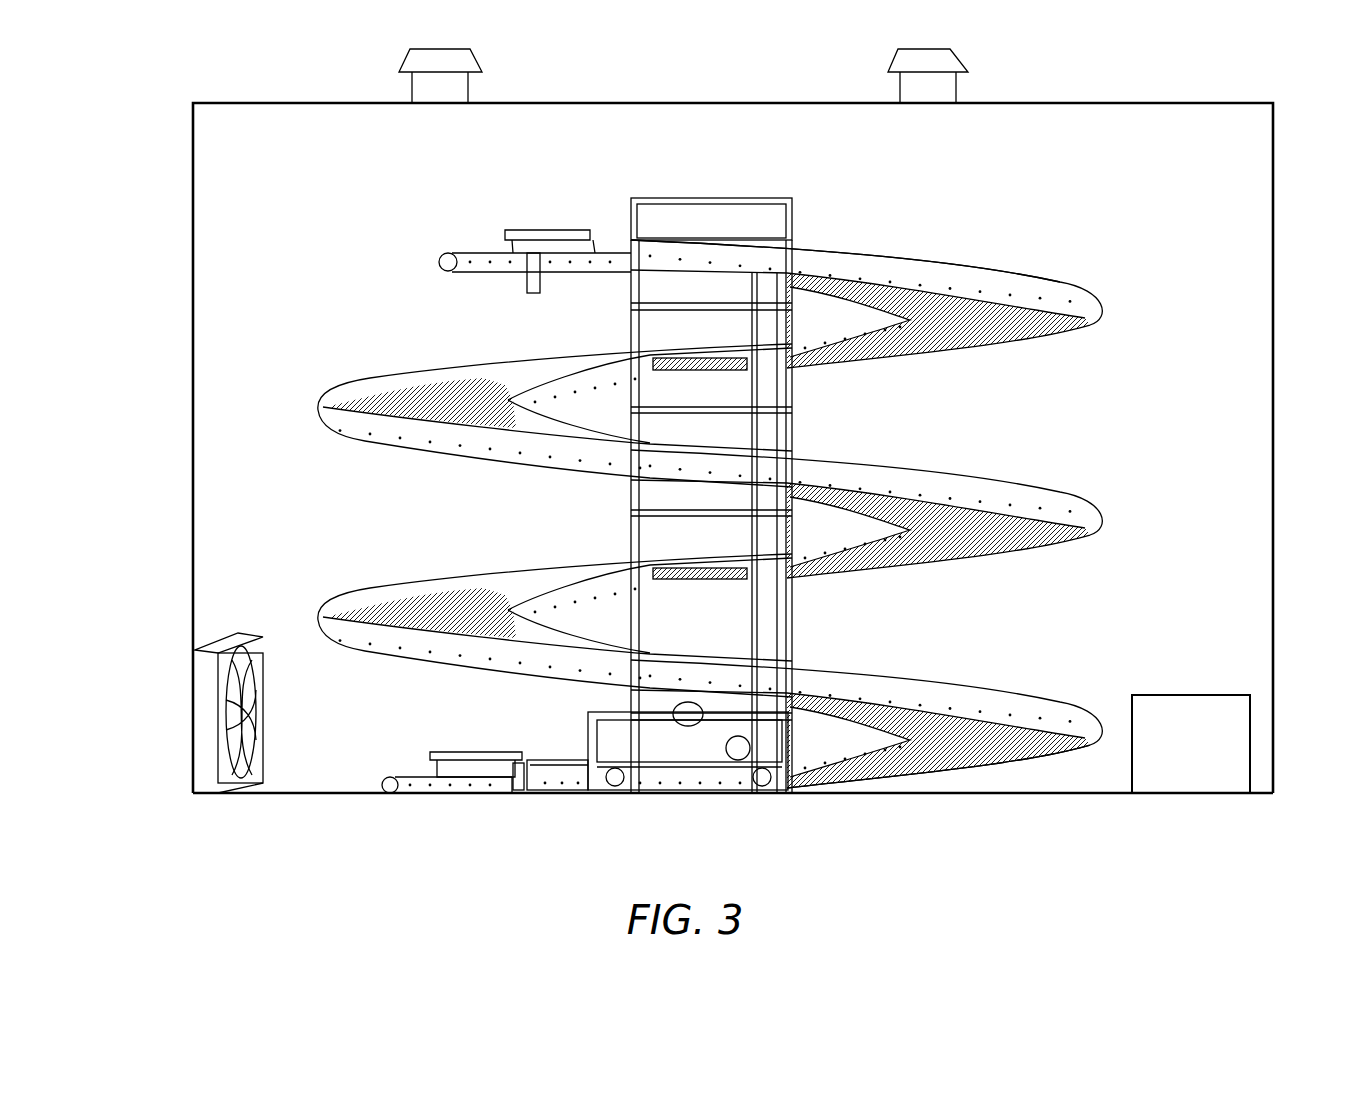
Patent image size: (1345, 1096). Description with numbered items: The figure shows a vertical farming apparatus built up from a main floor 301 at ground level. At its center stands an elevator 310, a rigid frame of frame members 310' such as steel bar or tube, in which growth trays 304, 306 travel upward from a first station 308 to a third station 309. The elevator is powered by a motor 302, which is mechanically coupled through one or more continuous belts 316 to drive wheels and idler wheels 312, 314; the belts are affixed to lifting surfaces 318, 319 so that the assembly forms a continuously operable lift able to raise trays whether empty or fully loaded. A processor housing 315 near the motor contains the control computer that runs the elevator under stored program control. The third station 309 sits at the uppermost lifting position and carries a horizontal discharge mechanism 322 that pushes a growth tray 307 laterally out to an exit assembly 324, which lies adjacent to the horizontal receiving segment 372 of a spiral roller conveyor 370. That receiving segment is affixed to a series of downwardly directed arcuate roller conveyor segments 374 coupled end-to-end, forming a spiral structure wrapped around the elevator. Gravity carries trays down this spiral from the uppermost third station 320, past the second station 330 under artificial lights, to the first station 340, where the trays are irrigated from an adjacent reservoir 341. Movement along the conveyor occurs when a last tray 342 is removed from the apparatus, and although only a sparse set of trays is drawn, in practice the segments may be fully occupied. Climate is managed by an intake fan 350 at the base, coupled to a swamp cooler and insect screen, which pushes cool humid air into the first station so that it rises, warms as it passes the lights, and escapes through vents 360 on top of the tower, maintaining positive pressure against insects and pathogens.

The main floor 301 is at (1145, 804).
The motor 302 is at (512, 796).
The growth tray 304 is at (667, 557).
The growth tray 306 is at (628, 352).
The growth tray 307 is at (524, 228).
The first station 308 is at (690, 727).
The third station 309 is at (789, 231).
The elevator 310 is at (711, 466).
The frame members 310' is at (744, 191).
The drive wheel 312 is at (612, 782).
The idler wheel 314 is at (762, 786).
The processor housing 315 is at (553, 792).
The continuous belt 316 is at (753, 630).
The lifting surface 318 is at (693, 602).
The lifting surface 319 is at (722, 392).
The third station 320 is at (1022, 238).
The horizontal discharge mechanism 322 is at (700, 285).
The exit assembly 324 is at (586, 277).
The second station 330 is at (1020, 452).
The first station 340 is at (1020, 655).
The reservoir 341 is at (1178, 694).
The growth tray 342 is at (470, 752).
The intake fan 350 is at (215, 636).
The vents 360 is at (408, 52).
The spiral roller conveyor 370 is at (1038, 778).
The horizontal receiving segment 372 is at (650, 242).
The arcuate roller conveyor segments 374 is at (383, 390).